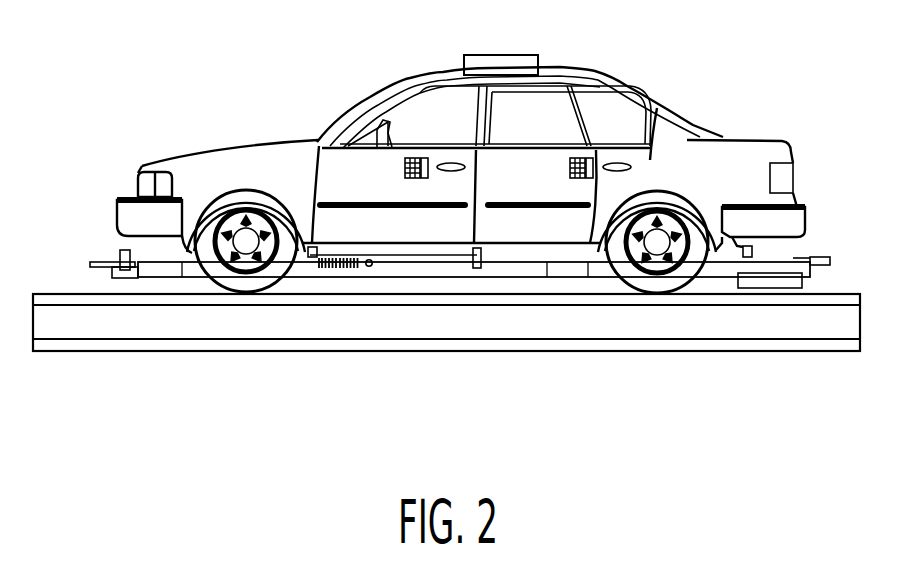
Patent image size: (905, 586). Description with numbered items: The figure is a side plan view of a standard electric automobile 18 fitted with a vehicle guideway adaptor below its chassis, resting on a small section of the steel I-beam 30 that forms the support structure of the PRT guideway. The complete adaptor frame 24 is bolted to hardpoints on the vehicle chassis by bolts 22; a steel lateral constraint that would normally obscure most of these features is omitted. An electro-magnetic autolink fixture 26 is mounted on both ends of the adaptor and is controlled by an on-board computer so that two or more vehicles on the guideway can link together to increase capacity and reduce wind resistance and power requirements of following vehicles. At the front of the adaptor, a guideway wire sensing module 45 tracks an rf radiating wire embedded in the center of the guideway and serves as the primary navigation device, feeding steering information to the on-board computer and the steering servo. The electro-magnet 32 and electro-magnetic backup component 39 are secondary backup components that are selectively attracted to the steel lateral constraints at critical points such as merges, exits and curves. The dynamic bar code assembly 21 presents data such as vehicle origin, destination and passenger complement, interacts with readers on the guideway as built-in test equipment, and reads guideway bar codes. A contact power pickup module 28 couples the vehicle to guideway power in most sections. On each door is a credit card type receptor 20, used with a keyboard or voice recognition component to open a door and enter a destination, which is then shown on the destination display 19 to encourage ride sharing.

The standard electric automobile 18 is at (167, 128).
The destination display 19 is at (505, 55).
The credit card type receptor 20 is at (420, 157).
The dynamic bar code assembly 21 is at (343, 268).
The bolts 22 is at (309, 258).
The adaptor frame 24 is at (793, 258).
The electro-magnetic autolink fixture 26 is at (92, 262).
The contact power pickup module 28 is at (802, 280).
The steel I-beam 30 is at (775, 325).
The electro-magnet 32 is at (153, 278).
The electro-magnetic backup component 39 is at (122, 250).
The guideway wire sensing module 45 is at (110, 270).